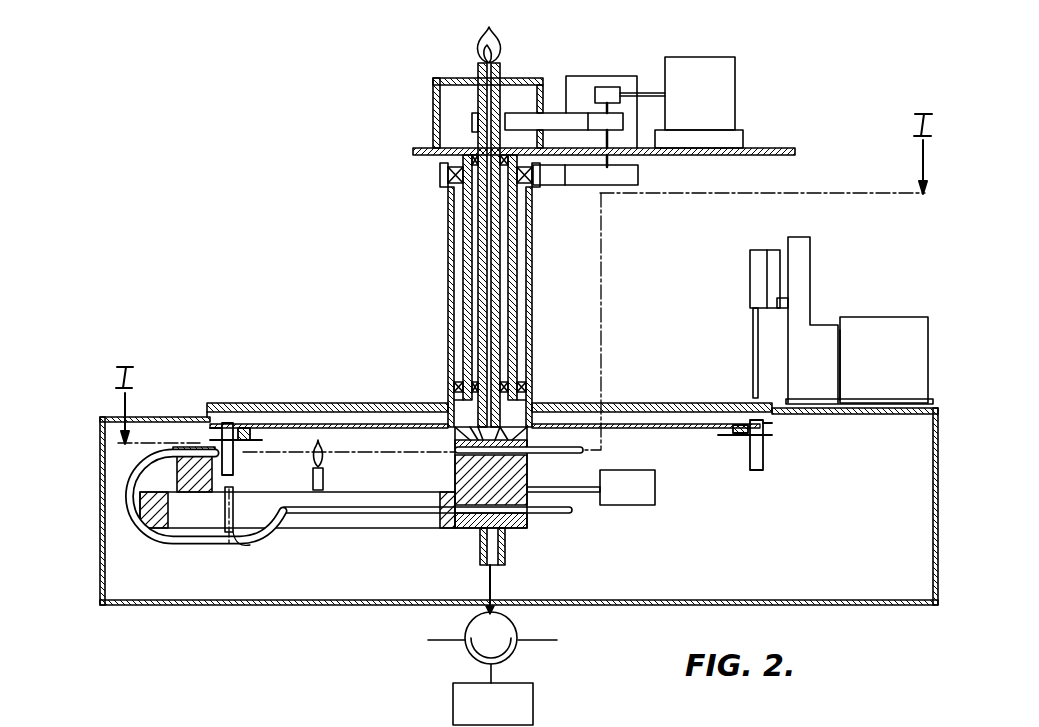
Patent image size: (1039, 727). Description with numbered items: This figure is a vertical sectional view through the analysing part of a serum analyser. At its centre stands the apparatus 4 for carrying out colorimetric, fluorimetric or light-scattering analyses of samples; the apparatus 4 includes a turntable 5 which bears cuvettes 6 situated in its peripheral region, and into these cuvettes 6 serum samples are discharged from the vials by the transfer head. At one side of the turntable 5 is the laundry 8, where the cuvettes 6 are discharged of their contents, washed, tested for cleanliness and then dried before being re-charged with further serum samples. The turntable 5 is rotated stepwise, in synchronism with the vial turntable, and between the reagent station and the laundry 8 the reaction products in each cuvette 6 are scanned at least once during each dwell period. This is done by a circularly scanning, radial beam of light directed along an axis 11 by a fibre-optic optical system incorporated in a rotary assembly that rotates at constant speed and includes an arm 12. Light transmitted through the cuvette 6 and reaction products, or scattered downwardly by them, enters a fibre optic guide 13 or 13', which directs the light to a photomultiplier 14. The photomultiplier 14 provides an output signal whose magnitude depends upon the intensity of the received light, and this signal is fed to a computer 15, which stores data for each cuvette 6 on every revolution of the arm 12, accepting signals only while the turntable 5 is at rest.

The apparatus 4 is at (418, 378).
The turntable 5 is at (688, 428).
The cuvettes 6 is at (230, 462).
The laundry 8 is at (918, 355).
The axis 11 is at (295, 452).
The arm 12 is at (362, 522).
The fibre optic guide 13 is at (169, 496).
The fibre optic guide 13' is at (256, 536).
The photomultiplier 14 is at (518, 630).
The computer 15 is at (528, 697).